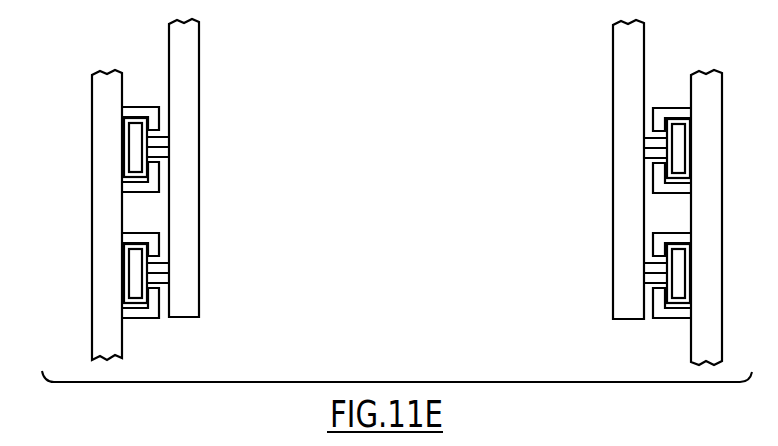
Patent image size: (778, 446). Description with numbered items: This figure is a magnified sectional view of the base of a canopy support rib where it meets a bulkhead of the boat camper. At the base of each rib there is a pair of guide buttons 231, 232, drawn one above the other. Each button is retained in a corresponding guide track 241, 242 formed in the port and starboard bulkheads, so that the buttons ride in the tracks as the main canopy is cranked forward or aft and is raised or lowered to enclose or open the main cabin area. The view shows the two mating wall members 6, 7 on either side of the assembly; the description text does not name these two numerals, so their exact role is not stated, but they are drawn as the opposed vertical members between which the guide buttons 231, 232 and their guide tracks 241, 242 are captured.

The first housing 6 is at (92, 130).
The second housing 7 is at (705, 73).
The guide button 231 is at (147, 138).
The guide track 241 is at (123, 176).
The guide button 232 is at (147, 261).
The guide track 242 is at (122, 300).